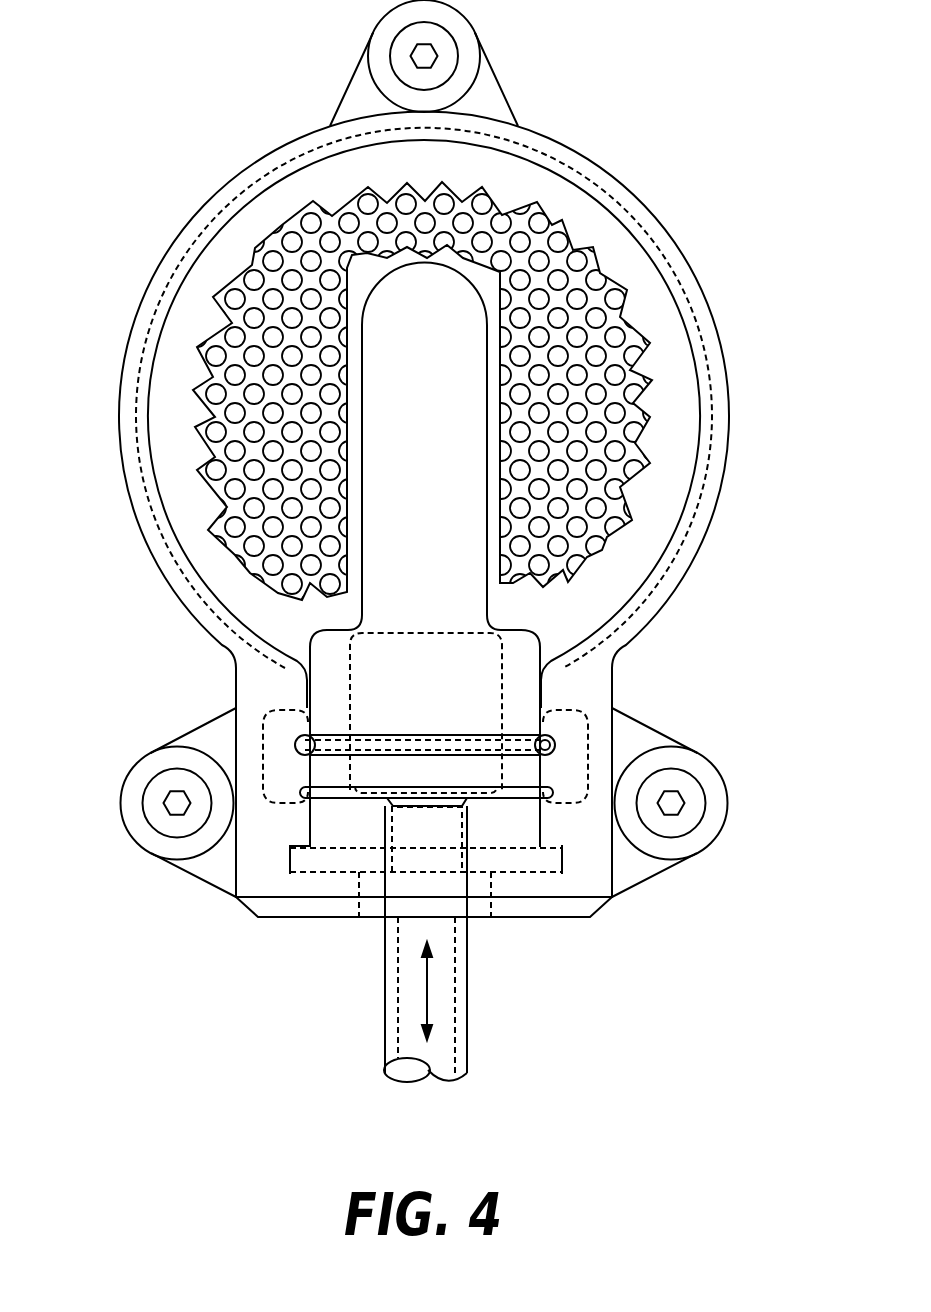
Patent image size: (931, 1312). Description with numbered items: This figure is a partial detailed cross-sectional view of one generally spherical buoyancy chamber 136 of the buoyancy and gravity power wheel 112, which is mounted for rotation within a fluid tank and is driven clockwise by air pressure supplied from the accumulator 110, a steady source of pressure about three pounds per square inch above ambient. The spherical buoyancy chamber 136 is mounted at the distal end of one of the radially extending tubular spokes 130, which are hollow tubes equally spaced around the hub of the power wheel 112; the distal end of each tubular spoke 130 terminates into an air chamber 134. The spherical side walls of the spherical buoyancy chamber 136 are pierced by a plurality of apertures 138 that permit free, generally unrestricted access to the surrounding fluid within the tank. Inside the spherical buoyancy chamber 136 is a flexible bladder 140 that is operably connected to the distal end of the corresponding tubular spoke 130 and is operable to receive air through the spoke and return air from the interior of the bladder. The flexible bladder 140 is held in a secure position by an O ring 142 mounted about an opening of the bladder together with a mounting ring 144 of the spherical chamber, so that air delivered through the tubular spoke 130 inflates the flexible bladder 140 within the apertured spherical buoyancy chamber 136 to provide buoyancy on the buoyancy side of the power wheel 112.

The accumulator 110 is at (177, 282).
The buoyancy and gravity power wheel 112 is at (492, 95).
The tubular spokes 130 is at (450, 1018).
The air chamber 134 is at (645, 193).
The spherical buoyancy chamber 136 is at (718, 458).
The apertures 138 is at (210, 393).
The flexible bladder 140 is at (363, 267).
The O ring 142 is at (300, 742).
The mounting ring 144 is at (542, 730).